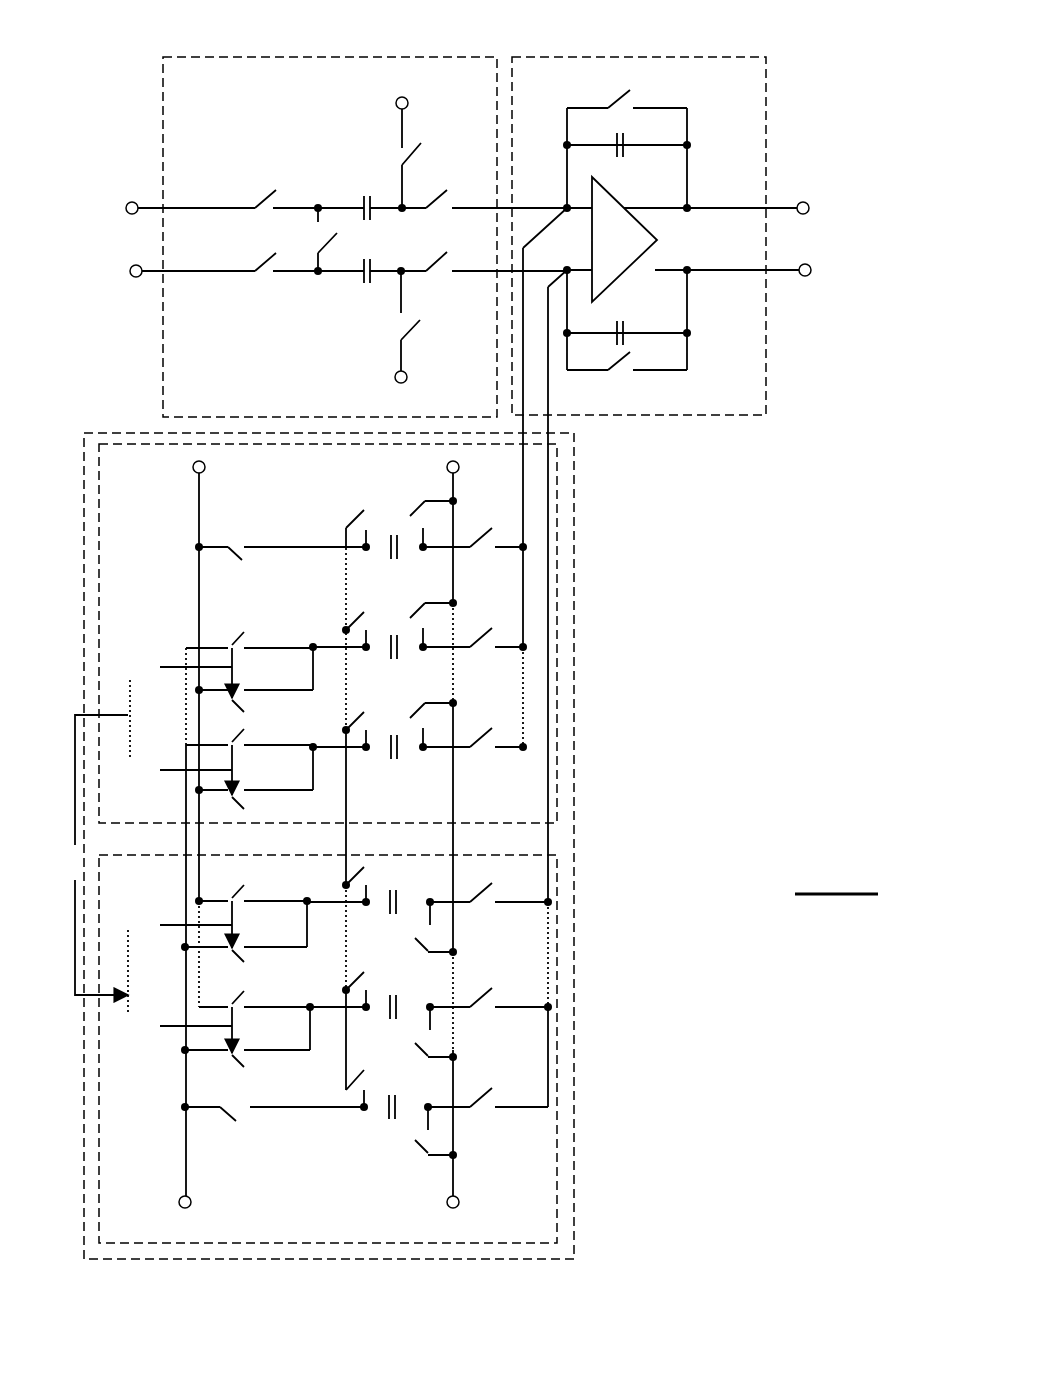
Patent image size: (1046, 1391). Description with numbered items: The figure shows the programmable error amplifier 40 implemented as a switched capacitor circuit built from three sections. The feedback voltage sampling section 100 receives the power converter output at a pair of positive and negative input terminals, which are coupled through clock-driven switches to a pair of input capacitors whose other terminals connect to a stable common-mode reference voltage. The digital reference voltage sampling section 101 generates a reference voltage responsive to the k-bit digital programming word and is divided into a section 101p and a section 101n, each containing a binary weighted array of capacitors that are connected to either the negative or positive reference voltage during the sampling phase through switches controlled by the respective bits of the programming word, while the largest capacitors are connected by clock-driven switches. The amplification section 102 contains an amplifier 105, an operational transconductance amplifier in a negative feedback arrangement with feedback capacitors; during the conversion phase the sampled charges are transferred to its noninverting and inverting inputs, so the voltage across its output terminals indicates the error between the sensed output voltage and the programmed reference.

The programmable error amplifier (PEA) 40 is at (808, 590).
The feedback voltage sampling section 100 is at (290, 57).
The digital reference voltage sampling section 101 is at (575, 725).
The p section of the digital reference voltage sampling section 101p is at (558, 575).
The n section of the digital reference voltage sampling section 101n is at (558, 1142).
The amplification section 102 is at (706, 57).
The amplifier 105 is at (660, 243).